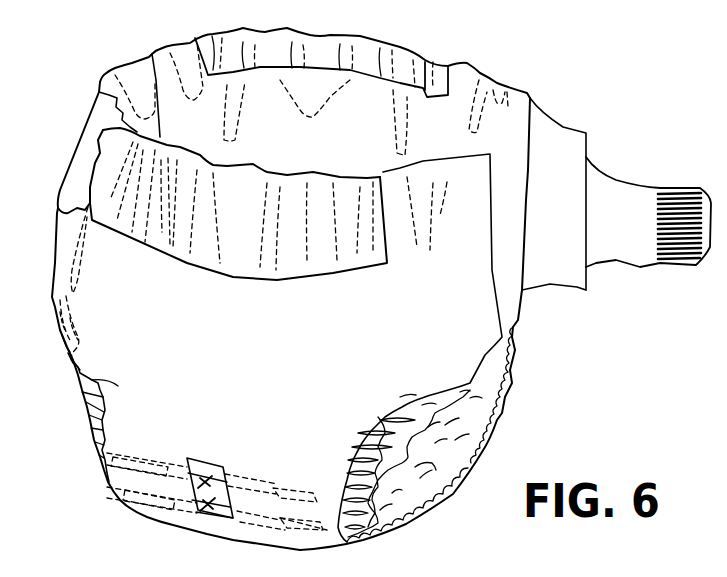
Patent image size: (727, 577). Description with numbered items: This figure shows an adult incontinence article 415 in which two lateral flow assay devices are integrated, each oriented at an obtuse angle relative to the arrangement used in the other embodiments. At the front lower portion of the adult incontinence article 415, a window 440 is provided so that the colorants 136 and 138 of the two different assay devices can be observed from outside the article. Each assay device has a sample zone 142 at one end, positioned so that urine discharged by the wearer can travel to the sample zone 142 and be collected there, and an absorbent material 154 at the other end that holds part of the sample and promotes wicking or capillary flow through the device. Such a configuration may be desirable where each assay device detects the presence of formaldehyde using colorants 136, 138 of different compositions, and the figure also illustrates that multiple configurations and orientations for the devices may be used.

The adult incontinence article 415 is at (117, 387).
The sample zone 142 is at (320, 567).
The absorbent material 154 is at (270, 480).
The window 440 is at (193, 460).
The colorant 138 is at (202, 517).
The colorant 136 is at (217, 520).